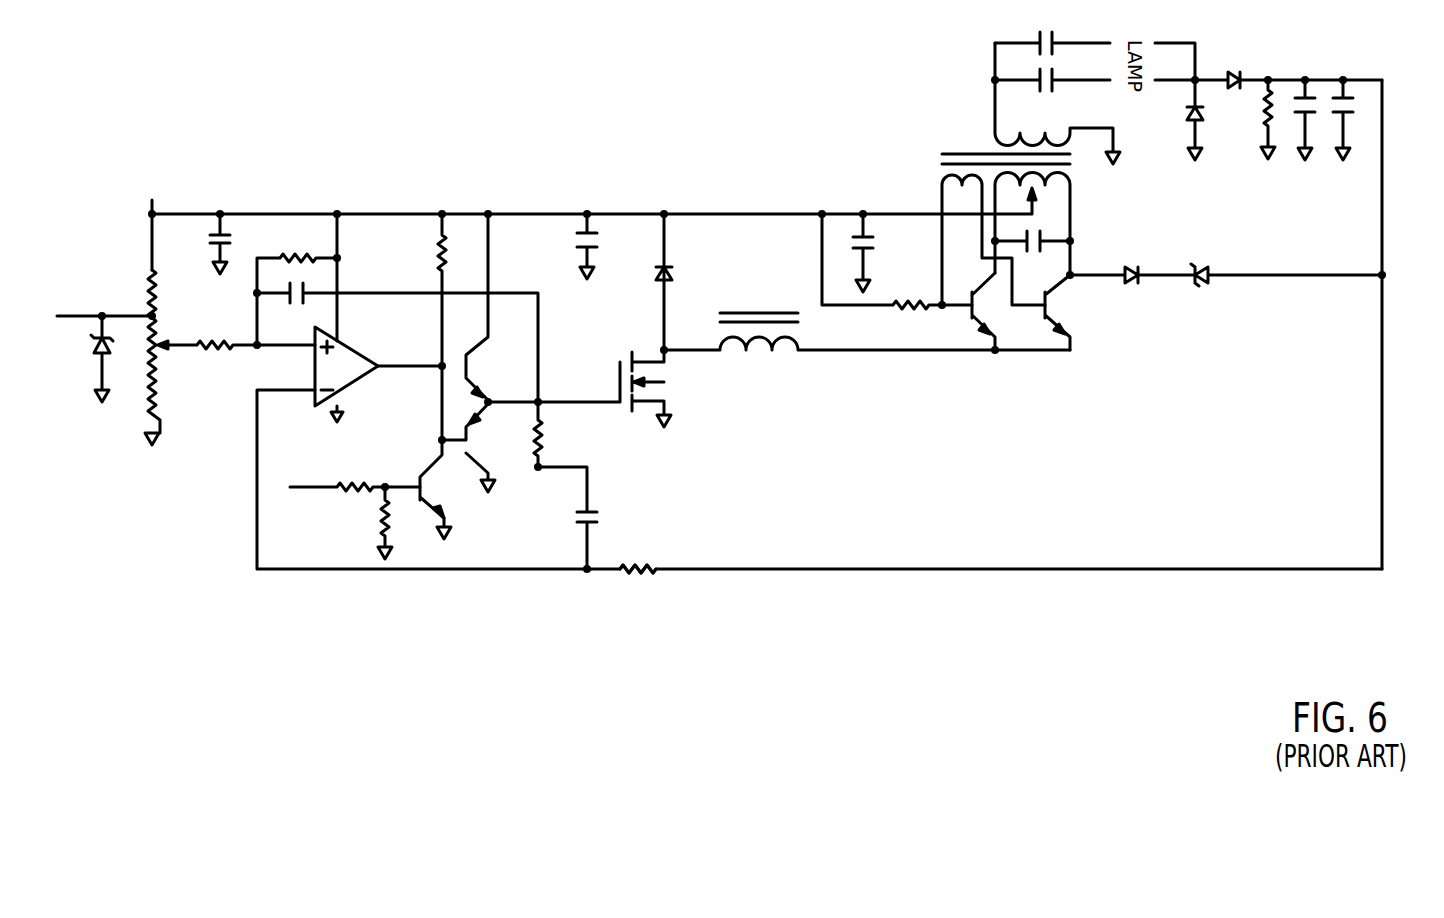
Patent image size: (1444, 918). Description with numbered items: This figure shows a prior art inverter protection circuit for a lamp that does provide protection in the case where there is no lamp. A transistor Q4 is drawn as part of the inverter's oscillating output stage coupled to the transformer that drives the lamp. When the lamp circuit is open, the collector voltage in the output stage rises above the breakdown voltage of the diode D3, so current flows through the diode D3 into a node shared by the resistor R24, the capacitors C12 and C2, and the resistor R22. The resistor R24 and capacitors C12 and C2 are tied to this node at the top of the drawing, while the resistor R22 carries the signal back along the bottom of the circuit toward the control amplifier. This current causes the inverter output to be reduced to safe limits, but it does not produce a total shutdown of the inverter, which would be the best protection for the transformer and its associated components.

The transistor Q4 is at (1076, 326).
The diode D3 is at (1197, 266).
The resistor R24 is at (1262, 97).
The capacitor C12 is at (1309, 95).
The capacitor C2 is at (1351, 96).
The resistor R22 is at (644, 566).